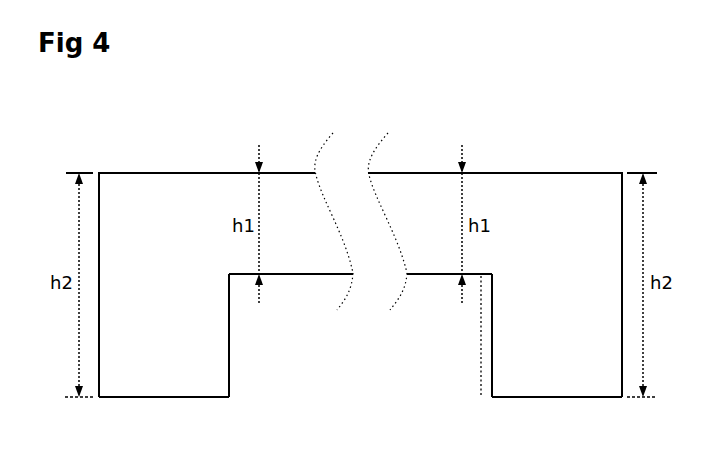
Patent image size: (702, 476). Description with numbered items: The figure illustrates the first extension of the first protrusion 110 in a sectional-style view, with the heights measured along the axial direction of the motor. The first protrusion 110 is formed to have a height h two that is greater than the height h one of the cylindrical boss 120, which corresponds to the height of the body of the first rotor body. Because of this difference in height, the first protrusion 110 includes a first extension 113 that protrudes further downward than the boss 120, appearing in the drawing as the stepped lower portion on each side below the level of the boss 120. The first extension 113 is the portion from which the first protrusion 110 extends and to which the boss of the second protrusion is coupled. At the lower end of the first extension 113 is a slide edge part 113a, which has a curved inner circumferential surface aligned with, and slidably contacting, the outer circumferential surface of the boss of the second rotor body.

The first protrusion 110 is at (165, 171).
The cylindrical boss 120 is at (299, 276).
The first extension 113 is at (240, 339).
The slide edge part 113a is at (236, 399).